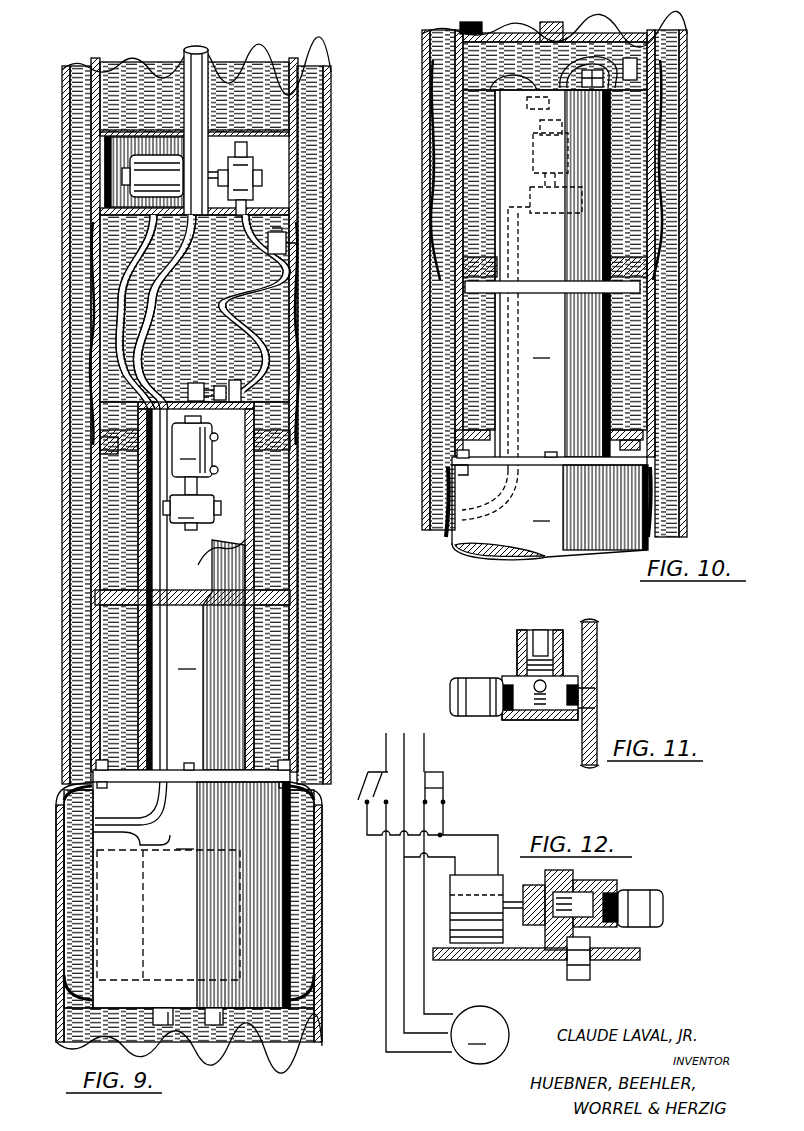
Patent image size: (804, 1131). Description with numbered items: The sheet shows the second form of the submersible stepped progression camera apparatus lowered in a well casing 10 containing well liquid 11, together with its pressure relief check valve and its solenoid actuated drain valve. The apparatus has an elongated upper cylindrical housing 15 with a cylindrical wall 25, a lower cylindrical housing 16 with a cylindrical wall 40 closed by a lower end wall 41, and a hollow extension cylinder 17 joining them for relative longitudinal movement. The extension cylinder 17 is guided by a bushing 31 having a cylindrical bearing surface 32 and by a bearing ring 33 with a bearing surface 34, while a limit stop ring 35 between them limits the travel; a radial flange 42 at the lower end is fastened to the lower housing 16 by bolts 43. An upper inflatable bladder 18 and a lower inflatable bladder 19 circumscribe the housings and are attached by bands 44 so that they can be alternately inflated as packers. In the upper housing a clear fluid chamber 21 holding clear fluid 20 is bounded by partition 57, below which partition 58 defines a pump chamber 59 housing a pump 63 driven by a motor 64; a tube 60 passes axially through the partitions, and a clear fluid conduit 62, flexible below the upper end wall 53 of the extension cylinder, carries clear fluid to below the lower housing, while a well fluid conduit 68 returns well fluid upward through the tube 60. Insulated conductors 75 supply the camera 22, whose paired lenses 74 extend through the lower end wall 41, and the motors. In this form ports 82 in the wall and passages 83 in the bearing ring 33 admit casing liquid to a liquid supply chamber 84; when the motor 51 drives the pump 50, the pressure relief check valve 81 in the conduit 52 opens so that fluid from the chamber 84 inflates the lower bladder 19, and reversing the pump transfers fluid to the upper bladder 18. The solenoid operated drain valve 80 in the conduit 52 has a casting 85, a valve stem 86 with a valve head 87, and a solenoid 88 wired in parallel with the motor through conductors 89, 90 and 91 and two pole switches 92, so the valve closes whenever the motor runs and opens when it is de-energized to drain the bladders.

In FIG. 9, the well casing 10 is at (66, 78).
In FIG. 10, the well casing 10 is at (425, 42).
In FIG. 9, the well liquid 11 is at (82, 90).
In FIG. 10, the well liquid 11 is at (440, 52).
In FIG. 9, the upper cylindrical housing 15 is at (94, 56).
In FIG. 10, the upper cylindrical housing 15 is at (665, 323).
In FIG. 11, the upper cylindrical housing 15 is at (606, 664).
In FIG. 9, the lower cylindrical housing 16 is at (191, 884).
In FIG. 10, the lower cylindrical housing 16 is at (550, 505).
In FIG. 9, the extension cylinder 17 is at (196, 586).
In FIG. 10, the extension cylinder 17 is at (552, 273).
In FIG. 9, the upper inflatable bladder 18 is at (66, 320).
In FIG. 10, the upper inflatable bladder 18 is at (688, 186).
In FIG. 9, the lower inflatable bladder 19 is at (60, 880).
In FIG. 10, the lower inflatable bladder 19 is at (660, 500).
In FIG. 9, the clear fluid 20 is at (258, 70).
In FIG. 9, the clear fluid chamber 21 is at (302, 70).
In FIG. 9, the camera 22 is at (150, 890).
In FIG. 9, the cylindrical wall 25 is at (95, 62).
In FIG. 10, the cylindrical wall 25 is at (650, 345).
In FIG. 11, the cylindrical wall 25 is at (598, 645).
In FIG. 9, the bushing 31 is at (280, 605).
In FIG. 10, the bushing 31 is at (472, 432).
In FIG. 9, the cylindrical bearing surface 32 is at (148, 612).
In FIG. 10, the cylindrical bearing surface 32 is at (492, 446).
In FIG. 9, the bearing ring 33 is at (128, 450).
In FIG. 10, the bearing ring 33 is at (472, 280).
In FIG. 9, the bearing surface 34 is at (112, 466).
In FIG. 10, the bearing surface 34 is at (492, 265).
In FIG. 9, the limit stop ring 35 is at (242, 560).
In FIG. 10, the limit stop ring 35 is at (523, 293).
In FIG. 9, the cylindrical wall 40 is at (75, 840).
In FIG. 10, the cylindrical wall 40 is at (505, 553).
In FIG. 9, the lower end wall 41 is at (155, 995).
In FIG. 9, the radial flange 42 is at (208, 690).
In FIG. 10, the radial flange 42 is at (530, 465).
In FIG. 9, the bolts 43 is at (189, 763).
In FIG. 10, the bolts 43 is at (618, 446).
In FIG. 9, the bands 44 is at (96, 226).
In FIG. 10, the bands 44 is at (688, 65).
In FIG. 9, the pump 50 is at (192, 503).
In FIG. 10, the pump 50 is at (545, 328).
In FIG. 9, the motor 51 is at (195, 446).
In FIG. 10, the motor 51 is at (533, 160).
In FIG. 12, the motor 51 is at (480, 1035).
In FIG. 9, the conduit 52 is at (265, 332).
In FIG. 10, the conduit 52 is at (638, 157).
In FIG. 11, the conduit 52 is at (582, 716).
In FIG. 12, the conduit 52 is at (592, 968).
In FIG. 9, the upper end wall of the extension cylinder 53 is at (150, 378).
In FIG. 12, the upper end wall of the extension cylinder 53 is at (490, 961).
In FIG. 9, the partition 57 is at (283, 133).
In FIG. 9, the partition 58 is at (103, 190).
In FIG. 10, the partition 58 is at (470, 26).
In FIG. 9, the pump chamber 59 is at (115, 147).
In FIG. 9, the tube 60 is at (208, 60).
In FIG. 10, the tube 60 is at (545, 28).
In FIG. 9, the clear fluid conduit 62 is at (246, 212).
In FIG. 9, the pump 63 is at (245, 167).
In FIG. 9, the motor 64 is at (150, 165).
In FIG. 9, the well fluid conduit 68 is at (125, 297).
In FIG. 9, the lenses 74 is at (212, 1025).
In FIG. 9, the insulated conductors 75 is at (118, 283).
In FIG. 9, the solenoid operated drain valve 80 is at (240, 390).
In FIG. 10, the solenoid operated drain valve 80 is at (603, 48).
In FIG. 12, the solenoid operated drain valve 80 is at (558, 944).
In FIG. 9, the pressure relief check valve 81 is at (290, 252).
In FIG. 10, the pressure relief check valve 81 is at (655, 106).
In FIG. 11, the pressure relief check valve 81 is at (515, 676).
In FIG. 9, the ports 82 is at (92, 212).
In FIG. 10, the ports 82 is at (688, 42).
In FIG. 9, the passages 83 is at (88, 406).
In FIG. 10, the passages 83 is at (468, 262).
In FIG. 9, the liquid supply chamber 84 is at (86, 255).
In FIG. 10, the liquid supply chamber 84 is at (662, 147).
In FIG. 9, the casting 85 is at (243, 396).
In FIG. 10, the casting 85 is at (551, 128).
In FIG. 12, the casting 85 is at (610, 890).
In FIG. 12, the valve stem 86 is at (518, 900).
In FIG. 12, the valve head 87 is at (604, 922).
In FIG. 9, the solenoid 88 is at (205, 388).
In FIG. 10, the solenoid 88 is at (538, 104).
In FIG. 12, the solenoid 88 is at (475, 877).
In FIG. 12, the conductor 89 is at (385, 900).
In FIG. 12, the conductor 90 is at (403, 928).
In FIG. 12, the conductor 91 is at (423, 945).
In FIG. 12, the two pole switches 92 is at (365, 800).